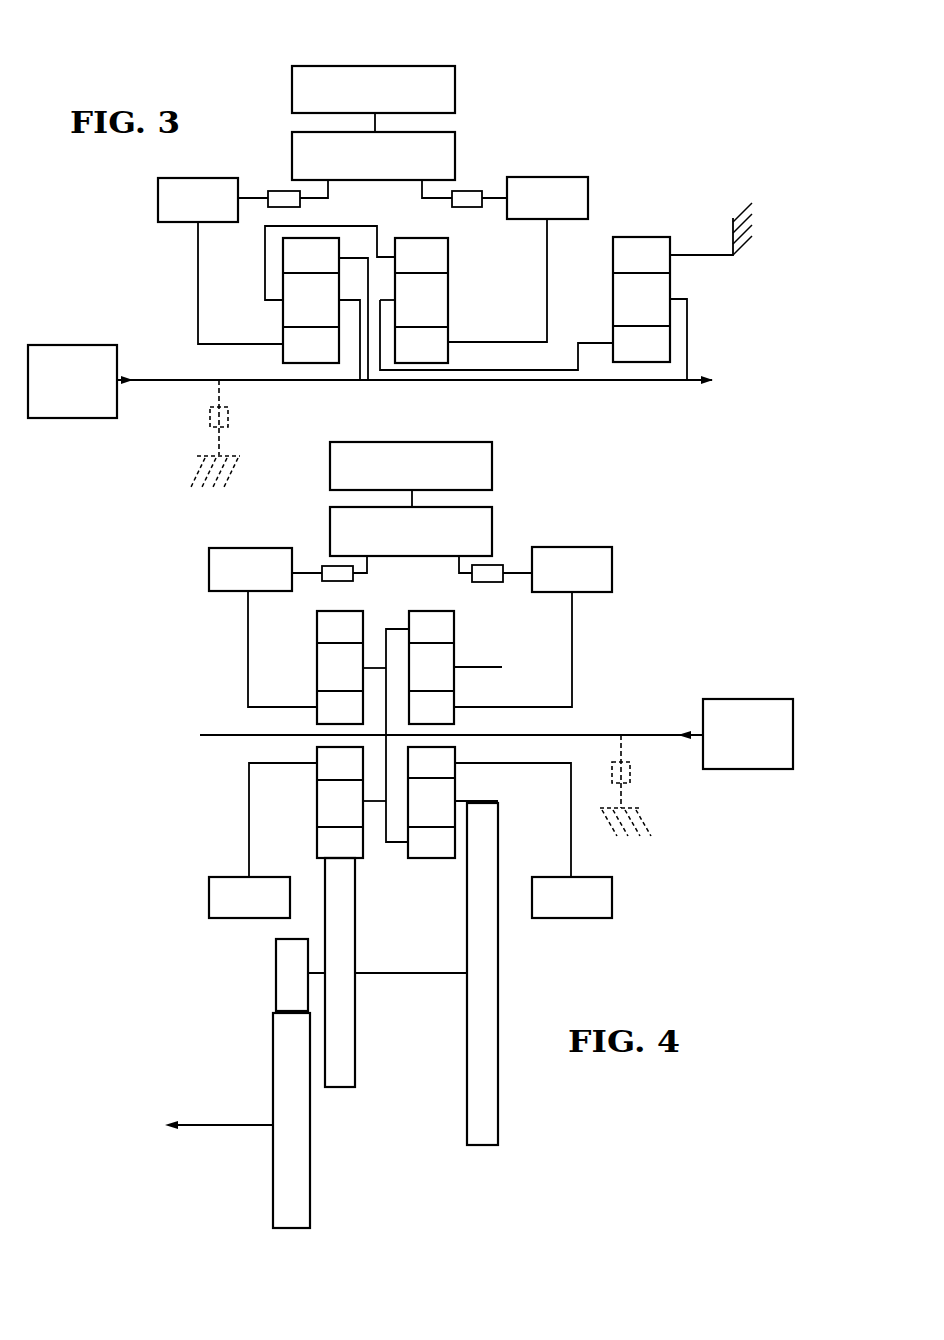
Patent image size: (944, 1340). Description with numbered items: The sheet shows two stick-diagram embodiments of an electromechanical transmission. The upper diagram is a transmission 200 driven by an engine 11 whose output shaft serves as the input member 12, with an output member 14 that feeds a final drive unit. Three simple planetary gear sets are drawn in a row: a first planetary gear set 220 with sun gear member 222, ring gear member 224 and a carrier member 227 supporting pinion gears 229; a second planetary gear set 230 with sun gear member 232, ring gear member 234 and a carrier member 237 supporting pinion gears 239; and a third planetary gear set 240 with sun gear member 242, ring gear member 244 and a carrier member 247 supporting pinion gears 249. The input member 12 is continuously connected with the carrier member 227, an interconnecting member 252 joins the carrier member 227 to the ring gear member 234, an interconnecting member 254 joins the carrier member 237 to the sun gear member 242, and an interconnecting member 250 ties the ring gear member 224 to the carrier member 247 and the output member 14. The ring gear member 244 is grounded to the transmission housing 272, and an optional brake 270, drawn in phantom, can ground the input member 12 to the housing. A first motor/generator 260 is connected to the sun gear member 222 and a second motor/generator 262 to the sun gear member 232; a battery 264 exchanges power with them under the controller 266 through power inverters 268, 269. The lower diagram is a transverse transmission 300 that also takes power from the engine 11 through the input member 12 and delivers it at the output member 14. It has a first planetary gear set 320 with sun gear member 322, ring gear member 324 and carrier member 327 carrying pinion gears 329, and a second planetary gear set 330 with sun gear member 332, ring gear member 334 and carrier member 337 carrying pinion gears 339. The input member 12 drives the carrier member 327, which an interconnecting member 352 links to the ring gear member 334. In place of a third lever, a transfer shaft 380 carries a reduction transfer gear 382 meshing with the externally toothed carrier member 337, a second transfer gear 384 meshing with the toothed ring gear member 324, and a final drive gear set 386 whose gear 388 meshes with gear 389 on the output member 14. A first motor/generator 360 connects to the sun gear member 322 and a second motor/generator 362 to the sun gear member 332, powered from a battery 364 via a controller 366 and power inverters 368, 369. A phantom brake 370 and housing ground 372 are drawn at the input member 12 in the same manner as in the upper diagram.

In FIG. 3, the transmission 200 is at (653, 112).
In FIG. 3, the battery 264 is at (292, 90).
In FIG. 3, the controller 266 is at (455, 149).
In FIG. 3, the power inverter 268 is at (279, 190).
In FIG. 3, the power inverter 269 is at (467, 207).
In FIG. 3, the first motor/generator 260 is at (158, 208).
In FIG. 3, the second motor/generator 262 is at (568, 177).
In FIG. 3, the first planetary gear set 220 is at (303, 327).
In FIG. 3, the ring gear member 224 is at (283, 255).
In FIG. 3, the carrier member 227 is at (265, 300).
In FIG. 3, the pinion gears 229 is at (283, 320).
In FIG. 3, the sun gear member 222 is at (283, 350).
In FIG. 3, the interconnecting member 252 is at (345, 226).
In FIG. 3, the carrier member 237 is at (381, 300).
In FIG. 3, the second planetary gear set 230 is at (454, 326).
In FIG. 3, the ring gear member 234 is at (449, 258).
In FIG. 3, the pinion gears 239 is at (449, 301).
In FIG. 3, the sun gear member 232 is at (449, 336).
In FIG. 3, the interconnecting member 254 is at (560, 370).
In FIG. 3, the third planetary gear set 240 is at (613, 335).
In FIG. 3, the ring gear member 244 is at (613, 258).
In FIG. 3, the pinion gears 249 is at (613, 301).
In FIG. 3, the sun gear member 242 is at (613, 336).
In FIG. 3, the transmission housing 272 is at (750, 200).
In FIG. 3, the carrier member 247 is at (688, 298).
In FIG. 3, the interconnecting member 250 is at (562, 381).
In FIG. 3, the output member 14 is at (702, 381).
In FIG. 4, the output member 14 is at (198, 1122).
In FIG. 3, the engine 11 is at (75, 418).
In FIG. 4, the engine 11 is at (745, 770).
In FIG. 3, the input member 12 is at (163, 378).
In FIG. 4, the input member 12 is at (632, 733).
In FIG. 3, the brake 270 is at (242, 418).
In FIG. 4, the transmission 300 is at (118, 620).
In FIG. 4, the battery 364 is at (496, 462).
In FIG. 4, the controller 366 is at (496, 527).
In FIG. 4, the power inverter 368 is at (330, 582).
In FIG. 4, the power inverter 369 is at (488, 583).
In FIG. 4, the first motor/generator 360 is at (209, 578).
In FIG. 4, the second motor/generator 362 is at (614, 572).
In FIG. 4, the first planetary gear set 320 is at (318, 690).
In FIG. 4, the ring gear member 324 is at (317, 626).
In FIG. 4, the pinion gears 329 is at (317, 668).
In FIG. 4, the sun gear member 322 is at (317, 705).
In FIG. 4, the second planetary gear set 330 is at (446, 711).
In FIG. 4, the ring gear member 334 is at (455, 626).
In FIG. 4, the pinion gears 339 is at (455, 668).
In FIG. 4, the sun gear member 332 is at (455, 705).
In FIG. 4, the interconnecting member 352 is at (397, 628).
In FIG. 4, the carrier member 327 is at (370, 803).
In FIG. 4, the carrier member 337 is at (486, 803).
In FIG. 4, the reduction transfer gear 382 is at (498, 1000).
In FIG. 4, the second transfer gear 384 is at (356, 1043).
In FIG. 4, the transfer shaft 380 is at (430, 975).
In FIG. 4, the final drive gear set 386 is at (242, 1083).
In FIG. 4, the gear 388 is at (276, 958).
In FIG. 4, the gear 389 is at (273, 1035).
In FIG. 4, the brake / torque transfer device 370 is at (644, 773).
In FIG. 4, the stationary member / transmission housing (ground) 372 is at (655, 840).